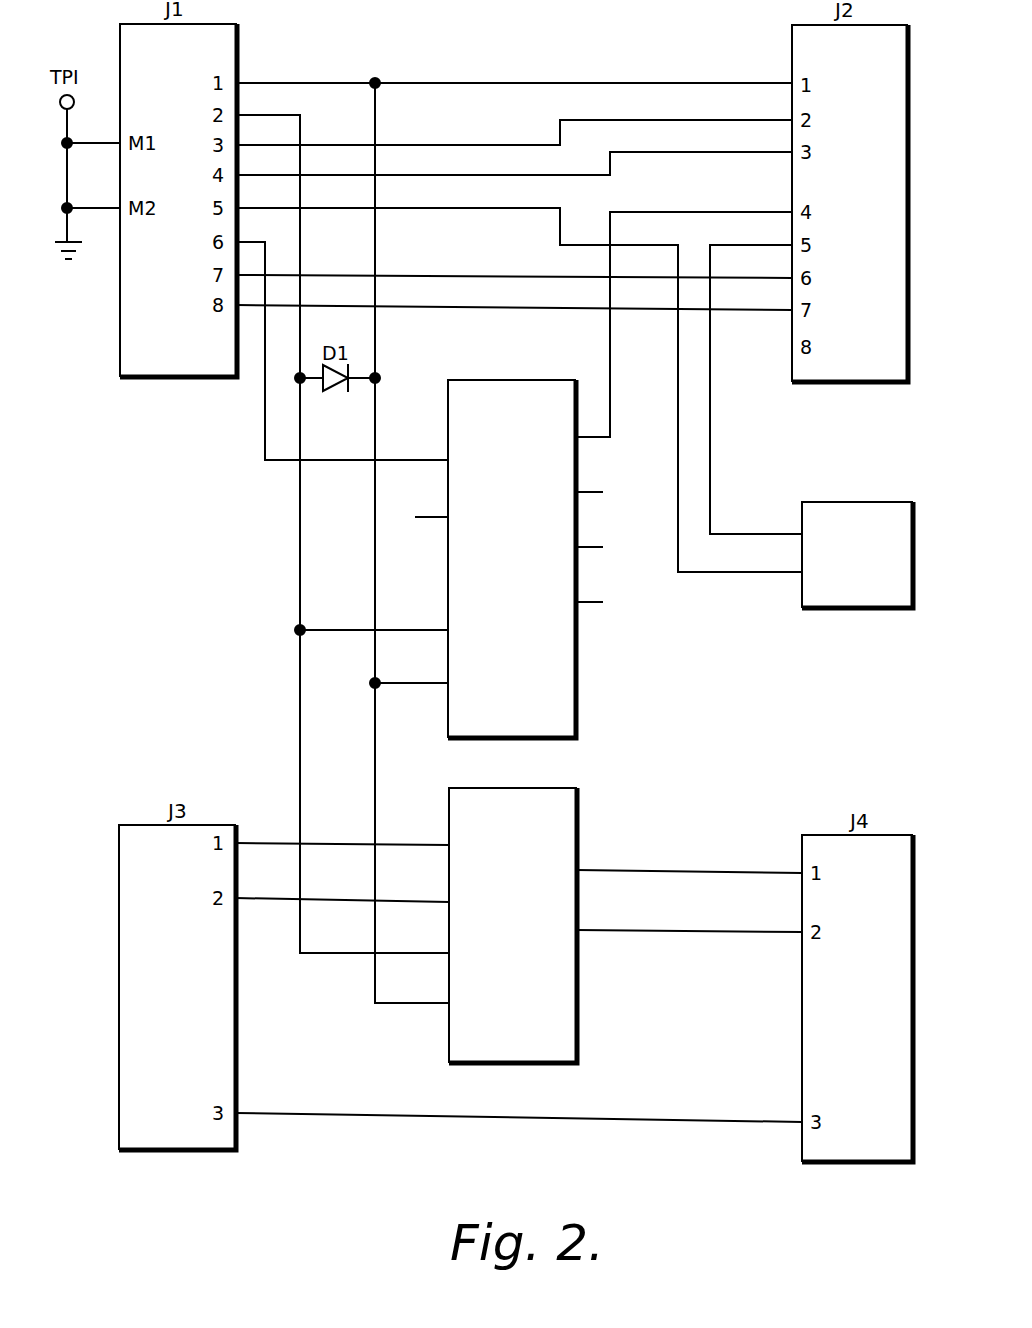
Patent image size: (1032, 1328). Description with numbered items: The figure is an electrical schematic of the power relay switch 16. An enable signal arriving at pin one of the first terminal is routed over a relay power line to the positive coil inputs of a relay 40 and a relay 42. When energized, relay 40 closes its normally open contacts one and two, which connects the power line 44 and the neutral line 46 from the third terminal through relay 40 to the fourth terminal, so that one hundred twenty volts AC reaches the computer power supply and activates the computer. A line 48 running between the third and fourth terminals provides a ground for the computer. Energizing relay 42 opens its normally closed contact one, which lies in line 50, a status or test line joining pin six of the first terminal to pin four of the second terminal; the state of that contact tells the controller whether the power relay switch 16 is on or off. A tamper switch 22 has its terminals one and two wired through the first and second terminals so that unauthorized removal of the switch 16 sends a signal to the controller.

The power relay switch 16 is at (636, 72).
The tamper switch 22 is at (877, 612).
The relay 40 is at (577, 812).
The relay 42 is at (576, 692).
The power line 44 is at (273, 840).
The neutral line 46 is at (272, 900).
The line 48 is at (725, 1117).
The line 50 is at (610, 415).